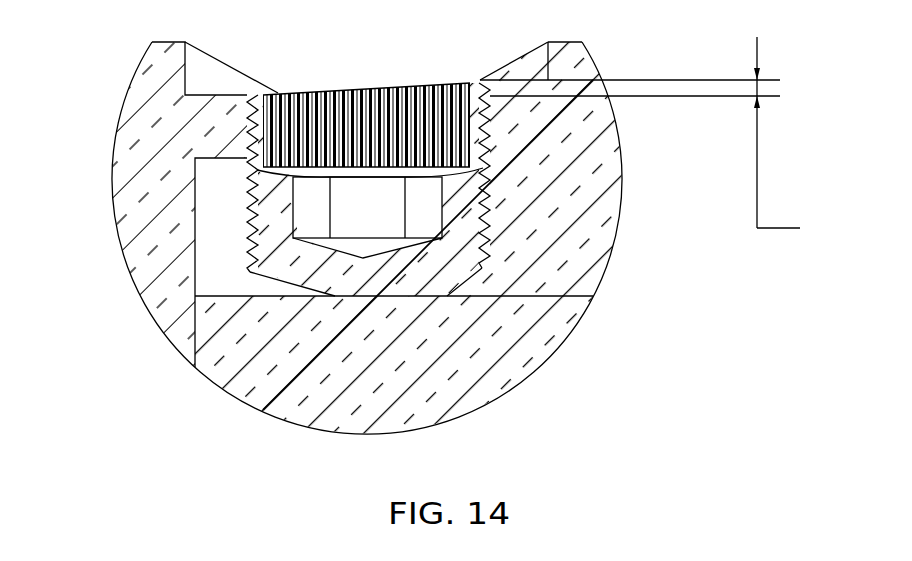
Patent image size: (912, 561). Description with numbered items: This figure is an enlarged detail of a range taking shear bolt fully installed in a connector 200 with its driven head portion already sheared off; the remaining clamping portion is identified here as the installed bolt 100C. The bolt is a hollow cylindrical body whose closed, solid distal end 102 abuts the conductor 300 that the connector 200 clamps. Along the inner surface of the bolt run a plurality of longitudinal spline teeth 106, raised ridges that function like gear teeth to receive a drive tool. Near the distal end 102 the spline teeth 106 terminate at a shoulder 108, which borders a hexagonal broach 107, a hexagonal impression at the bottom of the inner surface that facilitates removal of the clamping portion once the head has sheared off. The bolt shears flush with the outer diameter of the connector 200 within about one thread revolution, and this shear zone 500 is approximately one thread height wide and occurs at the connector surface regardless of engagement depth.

The connector 200 is at (140, 185).
The distal end 102 is at (380, 276).
The spline teeth 106 is at (440, 122).
The hexagonal broach 107 is at (420, 200).
The shoulder 108 is at (453, 170).
The conductor 300 is at (487, 357).
The shear zone 500 is at (810, 137).
The implant assembly 100C is at (232, 233).